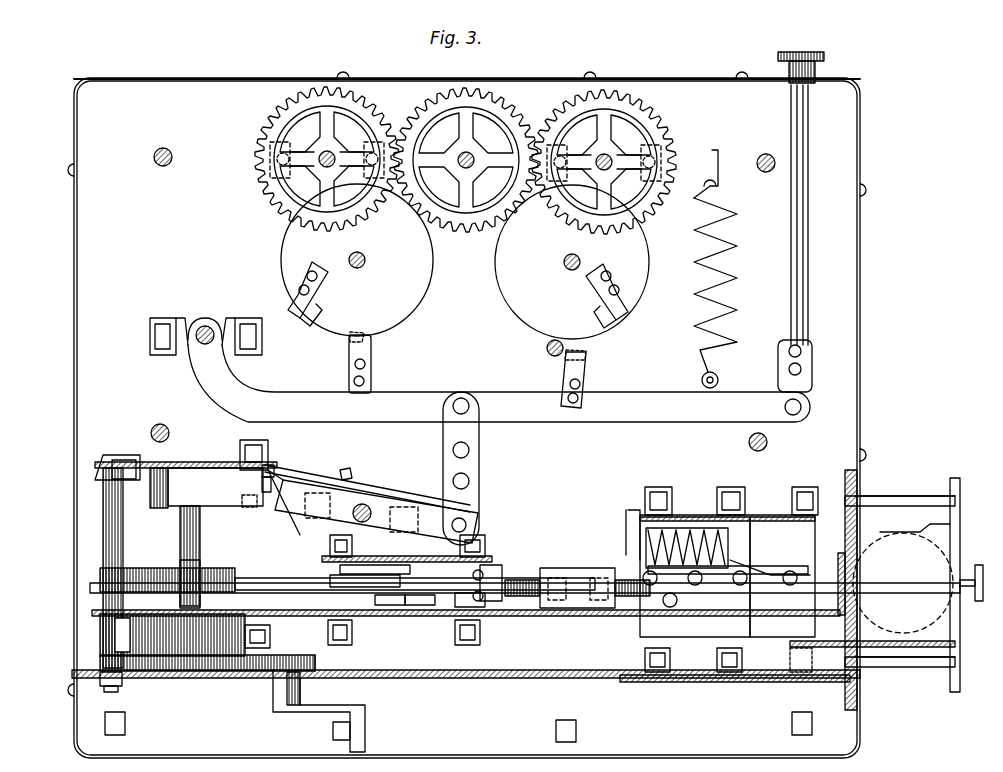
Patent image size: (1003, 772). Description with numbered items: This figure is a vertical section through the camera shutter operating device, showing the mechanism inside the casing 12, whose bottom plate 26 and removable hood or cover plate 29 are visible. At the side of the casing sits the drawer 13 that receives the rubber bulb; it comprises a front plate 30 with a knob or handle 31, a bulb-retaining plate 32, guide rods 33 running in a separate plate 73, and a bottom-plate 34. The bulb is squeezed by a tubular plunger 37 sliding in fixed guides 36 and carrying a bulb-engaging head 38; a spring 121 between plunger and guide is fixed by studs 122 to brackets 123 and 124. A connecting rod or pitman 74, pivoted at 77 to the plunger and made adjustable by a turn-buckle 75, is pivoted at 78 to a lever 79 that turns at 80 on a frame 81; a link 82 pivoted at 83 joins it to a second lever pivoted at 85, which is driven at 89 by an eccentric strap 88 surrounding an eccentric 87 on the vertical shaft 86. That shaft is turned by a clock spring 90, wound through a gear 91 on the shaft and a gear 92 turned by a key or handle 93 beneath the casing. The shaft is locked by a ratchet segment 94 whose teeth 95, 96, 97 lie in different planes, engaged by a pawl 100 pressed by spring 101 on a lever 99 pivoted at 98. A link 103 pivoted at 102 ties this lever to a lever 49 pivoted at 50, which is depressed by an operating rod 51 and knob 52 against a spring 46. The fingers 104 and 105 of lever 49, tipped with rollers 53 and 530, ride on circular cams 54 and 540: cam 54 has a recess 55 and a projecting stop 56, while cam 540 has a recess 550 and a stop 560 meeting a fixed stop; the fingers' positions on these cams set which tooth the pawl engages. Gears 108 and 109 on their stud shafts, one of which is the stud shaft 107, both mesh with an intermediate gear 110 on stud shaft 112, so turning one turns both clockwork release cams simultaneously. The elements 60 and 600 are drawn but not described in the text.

The casing 12 is at (452, 415).
The drawer 13 is at (920, 482).
The bottom plate 26 is at (412, 680).
The hood or cover plate 29 is at (410, 74).
The front plate 30 is at (960, 548).
The knob or handle 31 is at (981, 583).
The bulb-retaining plate 32 is at (918, 532).
The guide rods 33 is at (905, 494).
The bottom-plate 34 is at (895, 640).
The fixed guides 36 is at (731, 579).
The tubular plunger 37 is at (640, 622).
The bulb-engaging knob or head 38 is at (848, 584).
The spring 46 is at (734, 262).
The lever 49 is at (532, 418).
The pivot 50 is at (207, 326).
The operating rod 51 is at (808, 296).
The knob 52 is at (824, 56).
The roller 53 is at (352, 346).
The circular cam 54 is at (412, 308).
The notch or recess 55 is at (312, 326).
The projecting stop 56 is at (286, 310).
The shaft 60 is at (366, 250).
The plate 73 is at (850, 695).
The connecting rod or pitman 74 is at (530, 582).
The turn-buckle 75 is at (580, 576).
The pivot 77 is at (725, 596).
The pivot 78 is at (404, 606).
The lever 79 is at (436, 606).
The pivot 80 is at (476, 608).
The frame 81 is at (490, 570).
The link 82 is at (415, 574).
The pivot 83 is at (376, 566).
The pivot 85 is at (322, 560).
The vertical shaft 86 is at (200, 572).
The eccentric 87 is at (136, 572).
The eccentric strap 88 is at (250, 580).
The pivot 89 is at (298, 602).
The clock spring 90 is at (118, 640).
The gear 91 is at (212, 666).
The gear 92 is at (318, 660).
The key or handle 93 is at (300, 712).
The ratchet segment 94 is at (150, 506).
The ratchet tooth 95 is at (278, 472).
The ratchet tooth 96 is at (260, 486).
The ratchet tooth 97 is at (246, 508).
The pivot 98 is at (370, 508).
The lever 99 is at (290, 515).
The pawl 100 is at (340, 472).
The spring 101 is at (352, 492).
The pivot 102 is at (467, 526).
The link 103 is at (478, 492).
The arm or finger 104 is at (372, 364).
The arm or finger 105 is at (586, 378).
The stud shaft 107 is at (600, 155).
The gear 108 is at (318, 159).
The gear 109 is at (609, 162).
The intermediate gear 110 is at (413, 115).
The stud shaft 112 is at (472, 156).
The spring 121 is at (742, 518).
The studs 122 is at (730, 548).
The bracket 123 is at (618, 523).
The bracket 124 is at (755, 572).
The roller 530 is at (588, 352).
The circular cam 540 is at (520, 318).
The recess 550 is at (612, 326).
The stop or projection 560 is at (630, 308).
The shaft 600 is at (564, 251).